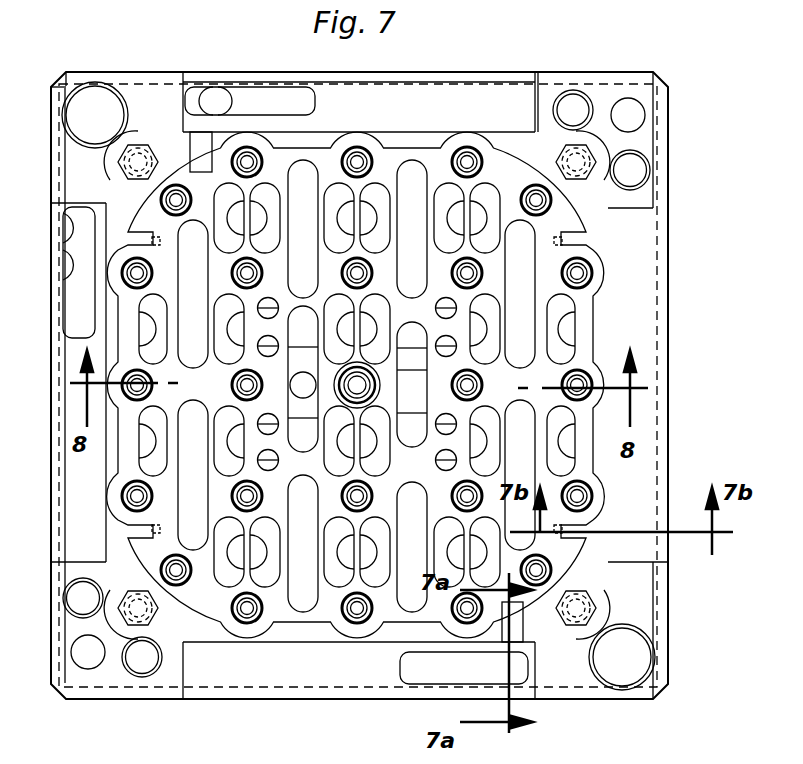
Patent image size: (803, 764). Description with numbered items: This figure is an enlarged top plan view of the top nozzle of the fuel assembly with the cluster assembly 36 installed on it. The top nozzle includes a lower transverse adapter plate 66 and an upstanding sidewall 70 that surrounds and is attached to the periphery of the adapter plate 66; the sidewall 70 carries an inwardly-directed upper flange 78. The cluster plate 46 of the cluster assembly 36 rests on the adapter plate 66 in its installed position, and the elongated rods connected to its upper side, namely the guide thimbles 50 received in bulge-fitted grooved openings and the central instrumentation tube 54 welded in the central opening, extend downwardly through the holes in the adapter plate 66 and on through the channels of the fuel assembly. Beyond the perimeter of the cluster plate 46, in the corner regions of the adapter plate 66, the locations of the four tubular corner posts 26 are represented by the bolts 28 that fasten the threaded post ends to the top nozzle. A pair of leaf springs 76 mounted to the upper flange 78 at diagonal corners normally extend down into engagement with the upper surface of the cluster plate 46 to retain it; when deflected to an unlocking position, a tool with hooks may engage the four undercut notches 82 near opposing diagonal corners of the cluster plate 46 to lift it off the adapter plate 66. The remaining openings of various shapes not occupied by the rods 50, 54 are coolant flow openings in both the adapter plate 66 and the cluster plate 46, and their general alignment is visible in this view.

The upstanding sidewall 70 is at (668, 385).
The inwardly-directed upper flange 78 is at (326, 110).
The adapter plate 66 is at (108, 466).
The cluster plate 46 is at (523, 135).
The cluster assembly 36 is at (600, 318).
The guide thimble 50 is at (455, 150).
The instrumentation tube 54 is at (372, 386).
The bolt 28 is at (127, 183).
The tubular post 26 is at (118, 168).
The undercut notch 82 is at (160, 245).
The leaf spring 76 is at (192, 157).